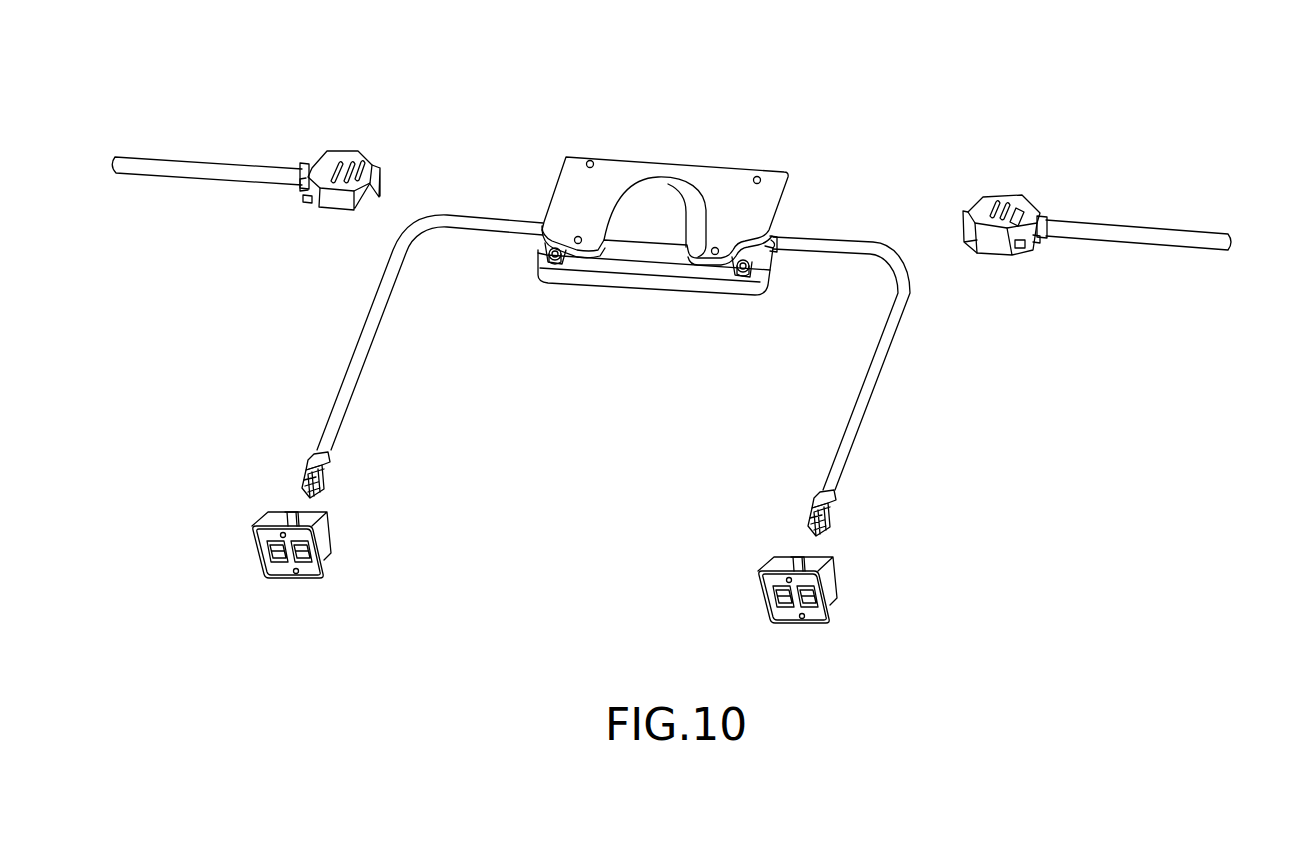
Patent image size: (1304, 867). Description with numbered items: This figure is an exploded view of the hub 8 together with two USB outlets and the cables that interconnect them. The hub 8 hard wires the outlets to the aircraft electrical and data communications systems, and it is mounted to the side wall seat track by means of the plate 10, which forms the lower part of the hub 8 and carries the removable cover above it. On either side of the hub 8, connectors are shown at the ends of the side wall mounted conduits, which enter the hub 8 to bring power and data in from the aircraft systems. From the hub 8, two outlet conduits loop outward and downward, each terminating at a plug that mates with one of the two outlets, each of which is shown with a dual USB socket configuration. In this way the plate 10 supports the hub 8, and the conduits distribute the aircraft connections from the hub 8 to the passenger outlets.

The hub 8 is at (710, 168).
The plate 10 is at (735, 295).